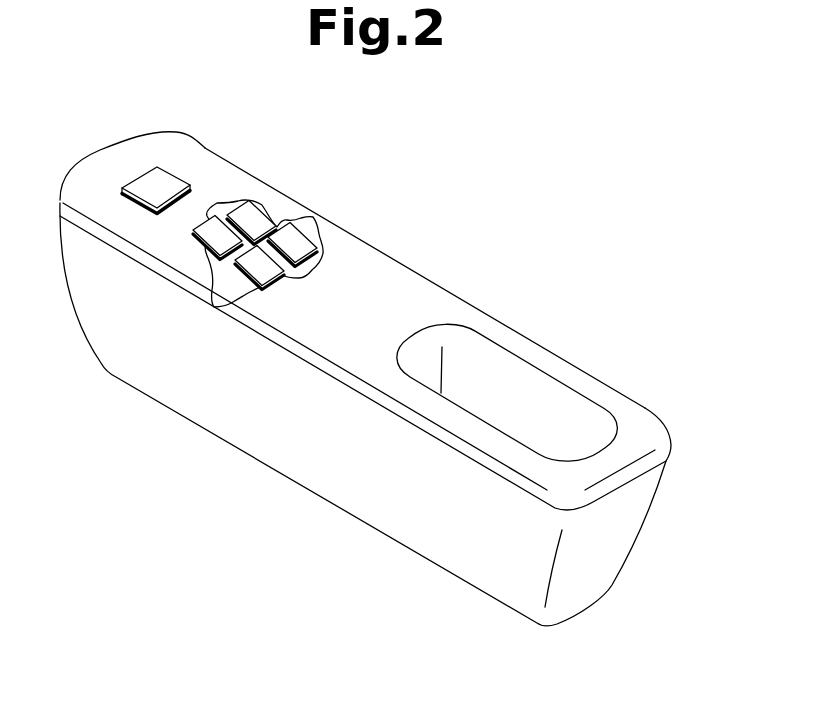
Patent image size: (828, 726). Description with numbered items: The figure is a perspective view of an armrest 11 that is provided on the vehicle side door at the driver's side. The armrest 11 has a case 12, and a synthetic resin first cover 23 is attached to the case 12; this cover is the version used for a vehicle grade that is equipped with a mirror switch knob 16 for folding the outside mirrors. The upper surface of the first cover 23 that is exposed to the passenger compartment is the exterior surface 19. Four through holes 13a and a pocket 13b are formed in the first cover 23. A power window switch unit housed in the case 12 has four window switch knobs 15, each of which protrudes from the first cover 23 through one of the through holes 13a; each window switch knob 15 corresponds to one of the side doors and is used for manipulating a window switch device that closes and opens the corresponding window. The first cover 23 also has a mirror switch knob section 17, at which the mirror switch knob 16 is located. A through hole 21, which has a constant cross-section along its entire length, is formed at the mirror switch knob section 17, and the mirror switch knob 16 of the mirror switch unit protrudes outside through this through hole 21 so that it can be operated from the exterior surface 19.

The armrest 11 is at (261, 485).
The case 12 is at (157, 396).
The through holes 13a is at (313, 218).
The pocket 13b is at (565, 403).
The window switch knobs 15 is at (219, 197).
The mirror switch knob 16 is at (163, 177).
The mirror switch knob section 17 is at (106, 177).
The exterior surface 19 is at (218, 166).
The through hole 21 is at (148, 207).
The first cover 23 is at (438, 290).